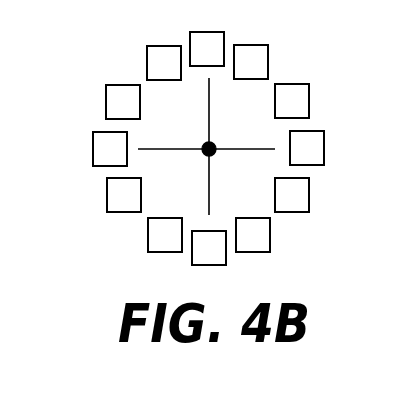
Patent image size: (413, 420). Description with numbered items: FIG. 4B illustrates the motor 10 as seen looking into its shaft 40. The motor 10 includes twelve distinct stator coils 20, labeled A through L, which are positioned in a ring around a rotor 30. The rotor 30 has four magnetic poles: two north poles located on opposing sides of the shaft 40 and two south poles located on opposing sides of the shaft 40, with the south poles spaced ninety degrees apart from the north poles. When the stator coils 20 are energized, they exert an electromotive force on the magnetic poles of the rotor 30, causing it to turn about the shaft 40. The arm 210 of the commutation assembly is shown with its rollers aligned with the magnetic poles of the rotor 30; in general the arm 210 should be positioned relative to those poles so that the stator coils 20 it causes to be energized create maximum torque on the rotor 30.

The motor 10 is at (61, 29).
The stator coils 20 is at (268, 60).
The rotor 30 is at (209, 127).
The shaft 40 is at (214, 154).
The arm 210 is at (209, 123).